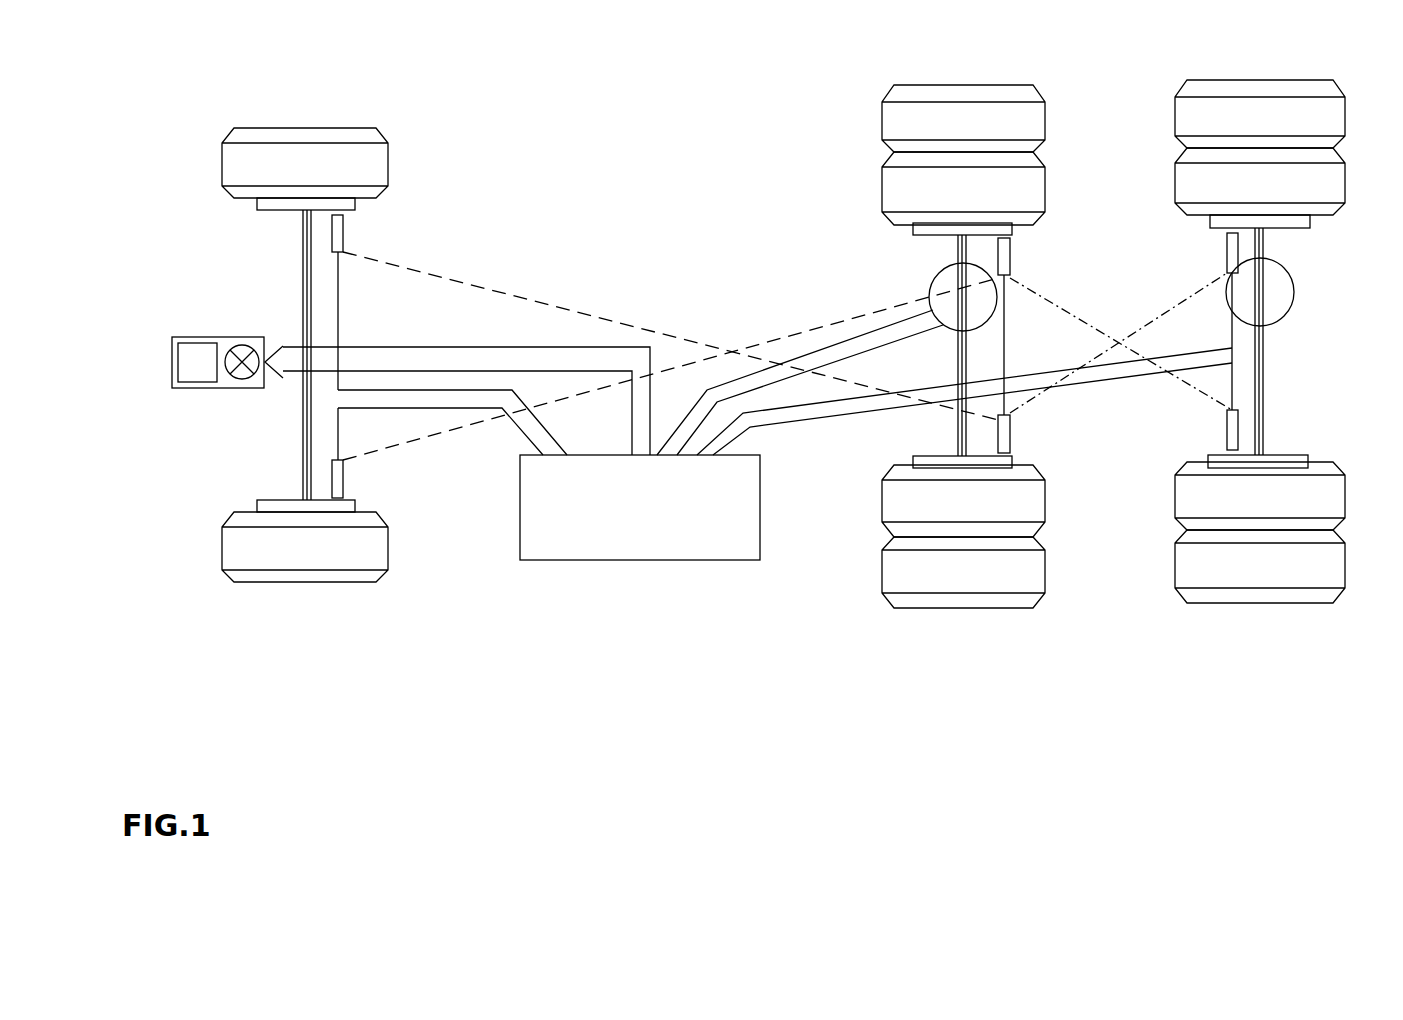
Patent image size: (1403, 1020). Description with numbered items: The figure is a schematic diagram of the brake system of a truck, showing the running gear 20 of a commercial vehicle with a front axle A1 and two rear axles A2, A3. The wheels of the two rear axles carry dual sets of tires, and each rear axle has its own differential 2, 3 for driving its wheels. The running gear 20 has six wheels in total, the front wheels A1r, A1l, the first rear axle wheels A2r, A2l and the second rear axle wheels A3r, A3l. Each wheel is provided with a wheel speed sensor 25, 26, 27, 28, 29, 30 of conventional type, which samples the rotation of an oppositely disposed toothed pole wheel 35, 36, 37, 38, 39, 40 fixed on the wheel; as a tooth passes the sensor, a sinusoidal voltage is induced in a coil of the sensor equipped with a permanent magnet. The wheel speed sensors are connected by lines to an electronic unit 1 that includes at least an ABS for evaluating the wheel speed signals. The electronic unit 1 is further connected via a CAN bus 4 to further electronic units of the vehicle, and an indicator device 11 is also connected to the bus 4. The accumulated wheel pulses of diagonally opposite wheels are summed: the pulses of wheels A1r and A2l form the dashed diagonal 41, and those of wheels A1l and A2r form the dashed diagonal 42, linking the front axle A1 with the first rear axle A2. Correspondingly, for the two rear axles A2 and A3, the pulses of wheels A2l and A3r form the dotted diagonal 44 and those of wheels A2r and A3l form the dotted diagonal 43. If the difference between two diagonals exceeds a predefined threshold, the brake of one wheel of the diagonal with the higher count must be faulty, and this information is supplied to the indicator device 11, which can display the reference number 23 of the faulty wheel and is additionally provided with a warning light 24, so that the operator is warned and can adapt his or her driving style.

The running gear 20 is at (629, 146).
The electronic unit 1 is at (657, 560).
The differential 2 is at (1003, 312).
The differential 3 is at (1298, 298).
The CAN bus 4 is at (380, 346).
The indicator device 11 is at (238, 388).
The reference number of the faulty wheel 23 is at (180, 340).
The warning light 24 is at (241, 345).
The wheel speed sensor 25 is at (343, 232).
The wheel speed sensor 26 is at (345, 492).
The wheel speed sensor 27 is at (1012, 250).
The wheel speed sensor 28 is at (1012, 420).
The wheel speed sensor 29 is at (1225, 247).
The wheel speed sensor 30 is at (1225, 440).
The toothed pole wheel 35 is at (240, 200).
The toothed pole wheel 36 is at (258, 510).
The toothed pole wheel 37 is at (913, 234).
The toothed pole wheel 38 is at (915, 456).
The toothed pole wheel 39 is at (1320, 228).
The toothed pole wheel 40 is at (1305, 455).
The diagonal 41 is at (538, 298).
The diagonal 42 is at (440, 440).
The diagonal 43 is at (1077, 320).
The diagonal 44 is at (1172, 384).
The front axle A1 is at (305, 228).
The first rear axle A2 is at (940, 262).
The second rear axle A3 is at (1295, 262).
The front right wheel A1r is at (360, 204).
The front left wheel A1l is at (385, 525).
The first rear axle right wheel A2r is at (1020, 228).
The first rear axle left wheel A2l is at (1040, 470).
The second rear axle right wheel A3r is at (1200, 226).
The second rear axle left wheel A3l is at (1175, 512).